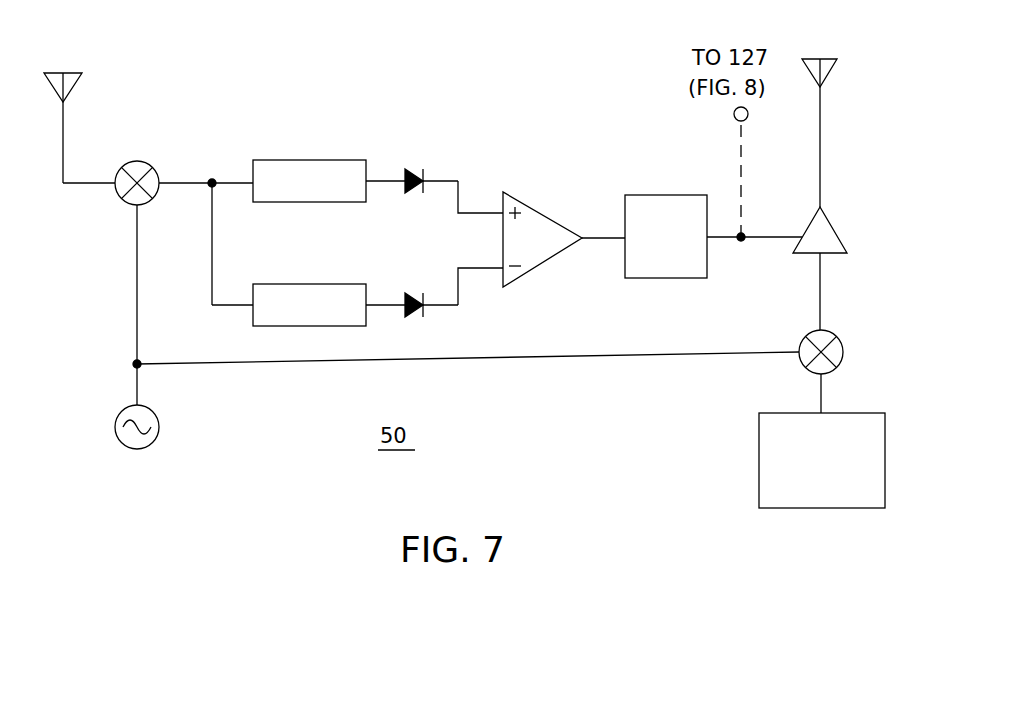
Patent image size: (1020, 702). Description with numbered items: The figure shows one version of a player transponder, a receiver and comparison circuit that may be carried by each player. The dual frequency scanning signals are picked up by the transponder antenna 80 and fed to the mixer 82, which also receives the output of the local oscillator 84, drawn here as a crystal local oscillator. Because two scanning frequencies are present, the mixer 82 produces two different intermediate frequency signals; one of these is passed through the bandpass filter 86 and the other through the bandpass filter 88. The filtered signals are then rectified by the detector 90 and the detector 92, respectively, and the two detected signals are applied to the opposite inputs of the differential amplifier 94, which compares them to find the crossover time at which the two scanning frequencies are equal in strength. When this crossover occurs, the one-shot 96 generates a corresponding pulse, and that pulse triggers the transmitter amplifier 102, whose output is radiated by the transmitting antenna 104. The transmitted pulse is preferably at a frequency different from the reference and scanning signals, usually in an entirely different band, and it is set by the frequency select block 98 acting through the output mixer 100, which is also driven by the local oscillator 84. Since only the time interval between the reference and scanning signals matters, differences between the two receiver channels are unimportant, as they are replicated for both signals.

The transponder antenna 80 is at (75, 83).
The mixer 82 is at (138, 158).
The local oscillator 84 is at (117, 415).
The bandpass filter 86 is at (300, 158).
The bandpass filter 88 is at (308, 282).
The detector 90 is at (416, 167).
The detector 92 is at (420, 290).
The differential amplifier 94 is at (550, 215).
The one-shot 96 is at (670, 195).
The frequency select circuit 98 is at (759, 452).
The mixer 100 is at (802, 338).
The amplifier 102 is at (832, 218).
The transmitting antenna 104 is at (815, 60).